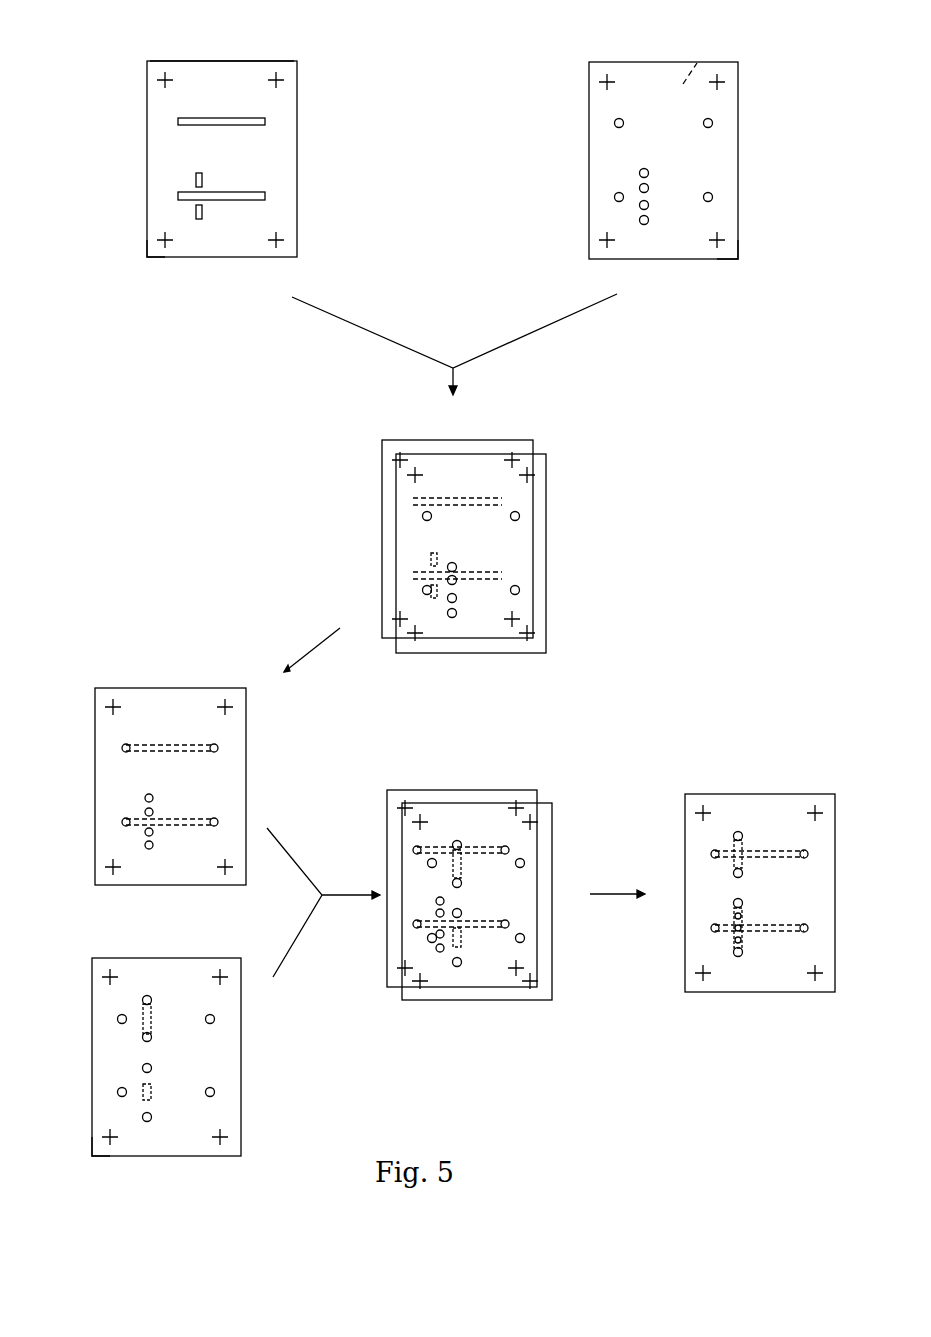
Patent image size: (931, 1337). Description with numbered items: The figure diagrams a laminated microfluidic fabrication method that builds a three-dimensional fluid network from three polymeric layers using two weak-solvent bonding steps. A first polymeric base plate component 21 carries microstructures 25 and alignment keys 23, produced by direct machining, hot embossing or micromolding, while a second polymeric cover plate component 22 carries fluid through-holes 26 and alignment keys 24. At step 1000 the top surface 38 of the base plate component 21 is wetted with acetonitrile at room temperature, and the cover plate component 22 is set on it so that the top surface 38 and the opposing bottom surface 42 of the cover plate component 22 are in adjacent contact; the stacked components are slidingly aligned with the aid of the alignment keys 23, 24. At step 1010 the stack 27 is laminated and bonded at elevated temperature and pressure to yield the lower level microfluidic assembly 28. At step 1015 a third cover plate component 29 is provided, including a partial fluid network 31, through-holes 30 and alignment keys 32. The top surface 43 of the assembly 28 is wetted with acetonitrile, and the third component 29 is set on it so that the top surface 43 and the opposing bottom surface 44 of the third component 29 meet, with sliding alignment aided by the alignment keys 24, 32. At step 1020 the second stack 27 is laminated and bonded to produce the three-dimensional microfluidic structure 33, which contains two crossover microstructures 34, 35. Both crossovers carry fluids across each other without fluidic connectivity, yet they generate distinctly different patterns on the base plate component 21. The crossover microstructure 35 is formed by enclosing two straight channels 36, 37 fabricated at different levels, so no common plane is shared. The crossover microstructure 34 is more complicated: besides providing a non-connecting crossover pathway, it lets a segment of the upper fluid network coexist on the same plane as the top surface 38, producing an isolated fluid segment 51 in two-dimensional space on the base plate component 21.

The polymeric base plate component 21 is at (138, 73).
The polymeric cover plate component 22 is at (572, 96).
The alignment keys 23 is at (160, 246).
The alignment keys 24 is at (728, 259).
The microstructures 25 is at (272, 130).
The fluid through-holes 26 is at (717, 128).
The laminated substrate stack 27 is at (390, 449).
The lower level microfluidic assembly 28 is at (88, 687).
The cover plate component 29 is at (84, 964).
The through-holes 30 is at (215, 1023).
The partial fluid network 31 is at (157, 1118).
The alignment keys 32 is at (100, 1142).
The three-dimensional microfluidic structure 33 is at (678, 998).
The crossover microstructure 34 is at (752, 962).
The crossover microstructure 35 is at (765, 838).
The straight channel 36 is at (735, 827).
The straight channel 37 is at (790, 864).
The top surface 38 is at (232, 70).
The bottom surface 42 is at (697, 63).
The top surface 43 is at (177, 700).
The bottom surface 44 is at (167, 980).
The isolated fluid segment 51 is at (193, 209).
The step 1000 is at (104, 124).
The step 1010 is at (339, 495).
The step 1015 is at (55, 997).
The step 1020 is at (440, 1017).